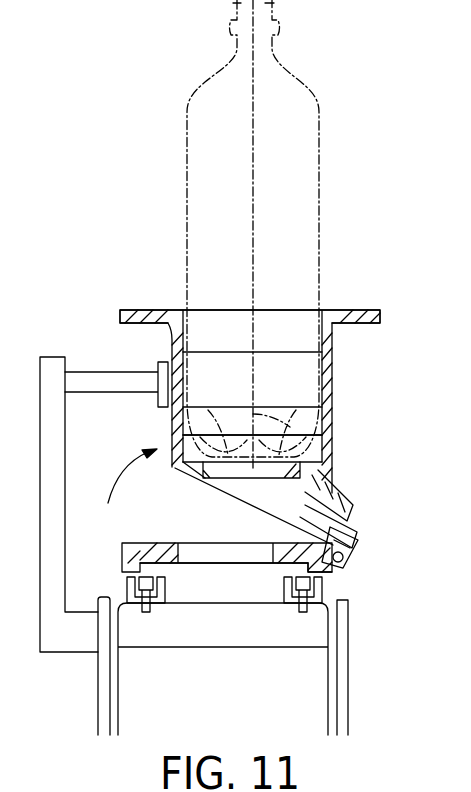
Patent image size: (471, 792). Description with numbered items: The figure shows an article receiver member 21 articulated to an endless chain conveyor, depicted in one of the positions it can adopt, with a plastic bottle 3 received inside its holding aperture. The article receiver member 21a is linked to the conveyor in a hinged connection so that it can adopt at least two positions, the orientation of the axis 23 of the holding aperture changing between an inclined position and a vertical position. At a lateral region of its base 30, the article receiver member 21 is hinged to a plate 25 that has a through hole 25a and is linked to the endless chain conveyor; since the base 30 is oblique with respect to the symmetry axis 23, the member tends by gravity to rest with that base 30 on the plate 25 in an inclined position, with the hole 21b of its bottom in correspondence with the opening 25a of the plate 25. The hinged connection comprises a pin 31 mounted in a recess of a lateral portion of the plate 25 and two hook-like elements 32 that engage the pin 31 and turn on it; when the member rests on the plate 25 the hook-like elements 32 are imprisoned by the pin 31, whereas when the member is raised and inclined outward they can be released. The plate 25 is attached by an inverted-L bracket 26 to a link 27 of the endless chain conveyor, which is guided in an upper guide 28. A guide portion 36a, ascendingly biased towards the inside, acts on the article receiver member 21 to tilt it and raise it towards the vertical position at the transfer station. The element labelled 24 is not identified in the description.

The plastic bottle 3 is at (300, 203).
The article receiver member 21 is at (337, 370).
The article receiver member 21a is at (328, 308).
The hole of the bottom of the article receiver member 21b is at (240, 470).
The axis of the holding aperture 23 is at (312, 420).
The guide plate 24 is at (322, 503).
The plate 25 is at (128, 550).
The through hole of the plate 25a is at (220, 563).
The bracket 26 is at (325, 572).
The link 27 is at (320, 585).
The upper guide 28 is at (290, 592).
The base 30 is at (205, 477).
The pin 31 is at (344, 558).
The hook-like element 32 is at (350, 548).
The ascending portion of the guide 36a is at (158, 364).